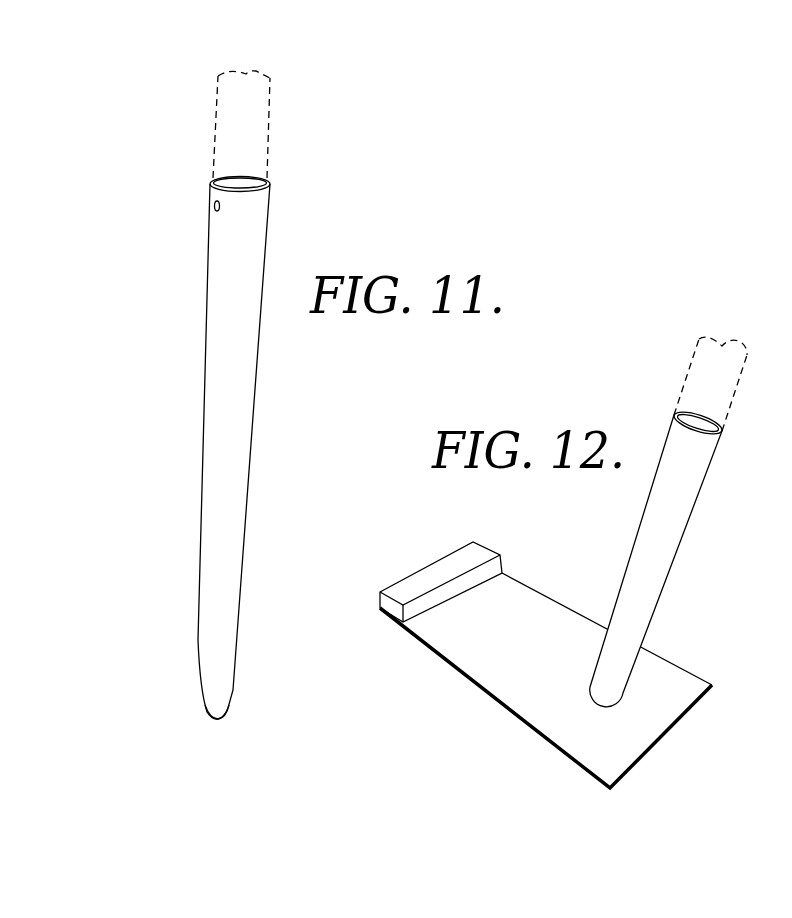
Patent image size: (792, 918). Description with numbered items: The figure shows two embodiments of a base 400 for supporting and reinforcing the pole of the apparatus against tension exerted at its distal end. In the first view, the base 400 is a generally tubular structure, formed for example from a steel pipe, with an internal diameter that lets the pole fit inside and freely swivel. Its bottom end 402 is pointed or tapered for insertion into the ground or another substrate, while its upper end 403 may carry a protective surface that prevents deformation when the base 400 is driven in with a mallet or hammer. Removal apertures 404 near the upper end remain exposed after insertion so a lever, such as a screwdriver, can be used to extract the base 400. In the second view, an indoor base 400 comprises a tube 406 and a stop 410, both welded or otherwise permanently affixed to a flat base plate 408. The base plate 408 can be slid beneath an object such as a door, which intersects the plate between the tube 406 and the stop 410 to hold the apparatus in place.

In FIG. 11, the base 400 is at (143, 128).
In FIG. 12, the base 400 is at (622, 405).
In FIG. 11, the bottom end 402 is at (220, 720).
In FIG. 11, the upper end 403 is at (267, 182).
In FIG. 11, the removal apertures 404 is at (213, 208).
In FIG. 11, the tube 406 is at (227, 300).
In FIG. 12, the tube 406 is at (673, 533).
In FIG. 12, the base plate 408 is at (595, 765).
In FIG. 12, the stop 410 is at (392, 608).